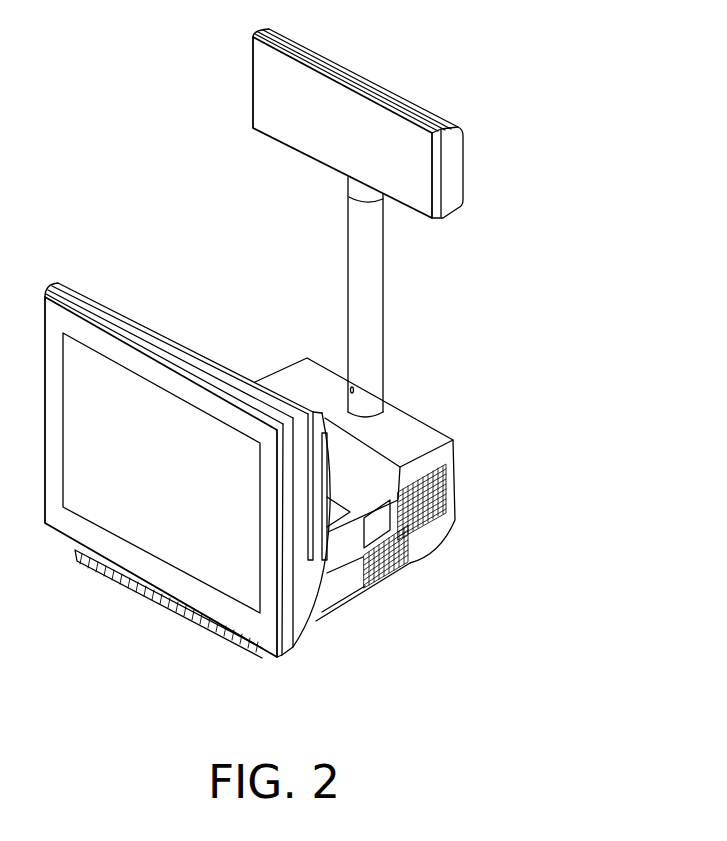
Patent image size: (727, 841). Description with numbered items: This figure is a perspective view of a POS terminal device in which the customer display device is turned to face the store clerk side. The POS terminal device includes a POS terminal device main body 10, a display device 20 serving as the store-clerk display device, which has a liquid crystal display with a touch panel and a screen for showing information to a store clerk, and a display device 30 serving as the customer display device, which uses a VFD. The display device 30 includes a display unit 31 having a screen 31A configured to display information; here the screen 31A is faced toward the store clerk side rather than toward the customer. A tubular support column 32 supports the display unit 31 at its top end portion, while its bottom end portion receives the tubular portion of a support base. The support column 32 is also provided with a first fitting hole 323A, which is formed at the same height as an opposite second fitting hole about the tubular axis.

The POS terminal device main body 10 is at (403, 560).
The display device 20 is at (232, 580).
The display device 30 is at (522, 252).
The display unit 31 is at (453, 167).
The screen 31A is at (290, 120).
The support column 32 is at (373, 295).
The first fitting hole 323A is at (355, 390).